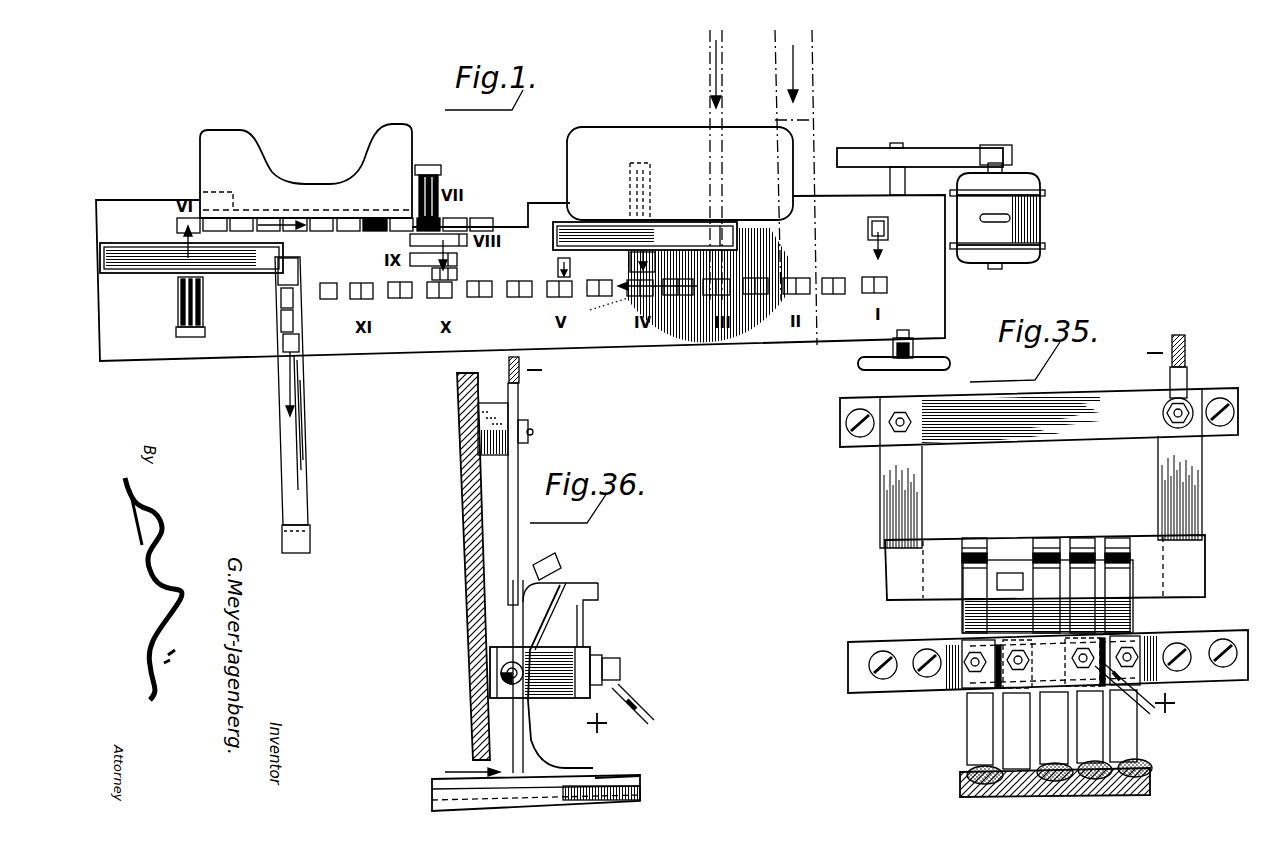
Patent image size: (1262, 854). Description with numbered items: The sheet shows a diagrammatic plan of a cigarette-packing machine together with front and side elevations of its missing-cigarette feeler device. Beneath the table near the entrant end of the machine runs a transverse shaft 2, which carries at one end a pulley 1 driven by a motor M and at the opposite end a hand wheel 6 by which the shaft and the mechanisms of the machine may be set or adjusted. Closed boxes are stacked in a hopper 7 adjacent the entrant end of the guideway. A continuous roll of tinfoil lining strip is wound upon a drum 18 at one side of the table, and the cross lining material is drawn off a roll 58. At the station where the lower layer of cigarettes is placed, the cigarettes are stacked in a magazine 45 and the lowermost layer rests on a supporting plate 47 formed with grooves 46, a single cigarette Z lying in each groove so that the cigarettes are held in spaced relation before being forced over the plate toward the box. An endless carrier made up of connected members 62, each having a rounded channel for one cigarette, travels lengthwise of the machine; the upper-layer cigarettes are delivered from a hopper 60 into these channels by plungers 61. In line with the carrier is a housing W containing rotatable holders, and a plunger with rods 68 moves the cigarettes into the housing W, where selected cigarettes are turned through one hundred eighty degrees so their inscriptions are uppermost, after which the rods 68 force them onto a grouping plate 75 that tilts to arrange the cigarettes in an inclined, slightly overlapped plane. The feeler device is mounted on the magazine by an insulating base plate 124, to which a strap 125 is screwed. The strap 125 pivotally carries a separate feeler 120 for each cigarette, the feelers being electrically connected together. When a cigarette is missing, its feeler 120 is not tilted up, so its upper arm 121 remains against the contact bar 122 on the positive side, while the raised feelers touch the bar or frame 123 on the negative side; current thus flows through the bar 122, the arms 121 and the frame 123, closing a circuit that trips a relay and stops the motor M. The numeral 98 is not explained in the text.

In FIG. 1, the pulley 1 is at (928, 150).
In FIG. 1, the transverse shaft 2 is at (906, 182).
In FIG. 1, the hand wheel 6 is at (940, 360).
In FIG. 1, the hopper 7 is at (889, 230).
In FIG. 1, the drum 18 is at (790, 95).
In FIG. 1, the magazine 45 is at (645, 236).
In FIG. 36, the grooves 46 is at (638, 783).
In FIG. 35, the supporting plate 47 is at (962, 787).
In FIG. 36, the supporting plate 47 is at (432, 800).
In FIG. 1, the roll 58 is at (710, 90).
In FIG. 1, the hopper 60 is at (128, 250).
In FIG. 1, the plungers 61 is at (177, 303).
In FIG. 1, the connected members 62 is at (350, 213).
In FIG. 1, the plunger rods 68 is at (439, 172).
In FIG. 1, the plate 75 is at (457, 259).
In FIG. 1, the slide rod 98 is at (303, 383).
In FIG. 35, the feeler 120 is at (1120, 736).
In FIG. 36, the feeler 120 is at (563, 752).
In FIG. 35, the upper arm of feeler 121 is at (1044, 548).
In FIG. 36, the upper arm of feeler 121 is at (562, 560).
In FIG. 35, the contact bar 122 is at (968, 592).
In FIG. 36, the contact bar 122 is at (585, 622).
In FIG. 35, the bar or frame 123 is at (1143, 549).
In FIG. 36, the bar or frame 123 is at (515, 468).
In FIG. 36, the insulating base plate 124 is at (462, 493).
In FIG. 35, the strap 125 is at (955, 695).
In FIG. 36, the strap 125 is at (504, 648).
In FIG. 1, the motor M is at (1043, 228).
In FIG. 1, the housing W is at (410, 239).
In FIG. 35, the cigarette Z is at (1142, 768).
In FIG. 36, the cigarette Z is at (605, 778).